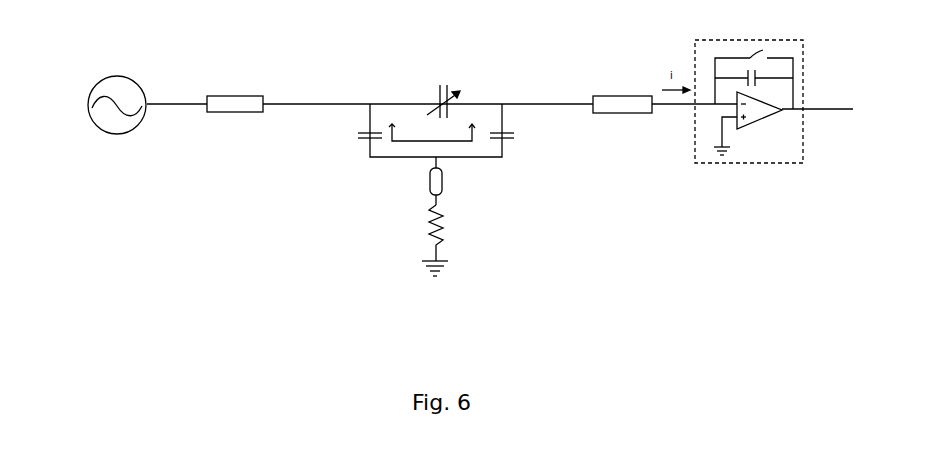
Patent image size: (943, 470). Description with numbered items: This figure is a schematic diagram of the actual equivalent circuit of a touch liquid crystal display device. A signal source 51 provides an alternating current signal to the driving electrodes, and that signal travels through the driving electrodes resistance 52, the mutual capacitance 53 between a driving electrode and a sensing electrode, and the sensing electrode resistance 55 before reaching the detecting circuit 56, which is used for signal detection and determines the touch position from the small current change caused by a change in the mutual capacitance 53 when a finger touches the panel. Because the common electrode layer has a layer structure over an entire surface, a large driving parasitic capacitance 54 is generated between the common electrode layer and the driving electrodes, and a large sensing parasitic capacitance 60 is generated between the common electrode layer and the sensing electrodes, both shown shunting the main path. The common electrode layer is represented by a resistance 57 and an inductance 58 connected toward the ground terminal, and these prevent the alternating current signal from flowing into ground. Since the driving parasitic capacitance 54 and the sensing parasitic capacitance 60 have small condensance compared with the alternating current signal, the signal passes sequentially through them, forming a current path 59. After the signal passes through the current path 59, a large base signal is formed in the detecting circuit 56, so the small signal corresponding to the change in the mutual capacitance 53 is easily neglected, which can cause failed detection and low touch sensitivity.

The signal source 51 is at (120, 93).
The driving electrodes resistance 52 is at (236, 94).
The mutual capacitance 53 is at (440, 85).
The driving parasitic capacitance 54 is at (352, 142).
The sensing electrode resistance 55 is at (618, 98).
The detecting circuit 56 is at (762, 72).
The resistance of the common electrode layer 57 is at (443, 184).
The inductance of the common electrode layer 58 is at (439, 220).
The current path 59 is at (404, 147).
The sensing parasitic capacitance 60 is at (517, 145).